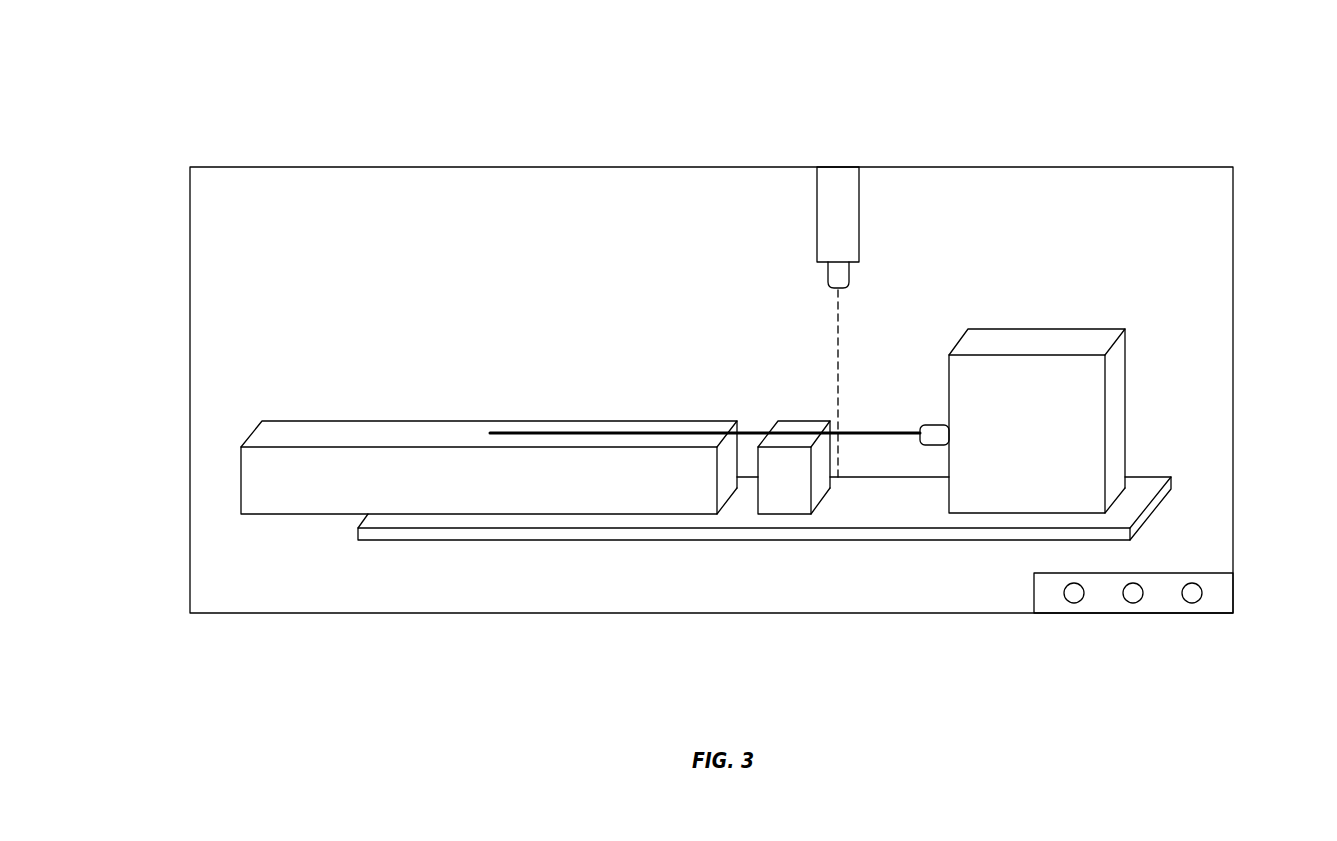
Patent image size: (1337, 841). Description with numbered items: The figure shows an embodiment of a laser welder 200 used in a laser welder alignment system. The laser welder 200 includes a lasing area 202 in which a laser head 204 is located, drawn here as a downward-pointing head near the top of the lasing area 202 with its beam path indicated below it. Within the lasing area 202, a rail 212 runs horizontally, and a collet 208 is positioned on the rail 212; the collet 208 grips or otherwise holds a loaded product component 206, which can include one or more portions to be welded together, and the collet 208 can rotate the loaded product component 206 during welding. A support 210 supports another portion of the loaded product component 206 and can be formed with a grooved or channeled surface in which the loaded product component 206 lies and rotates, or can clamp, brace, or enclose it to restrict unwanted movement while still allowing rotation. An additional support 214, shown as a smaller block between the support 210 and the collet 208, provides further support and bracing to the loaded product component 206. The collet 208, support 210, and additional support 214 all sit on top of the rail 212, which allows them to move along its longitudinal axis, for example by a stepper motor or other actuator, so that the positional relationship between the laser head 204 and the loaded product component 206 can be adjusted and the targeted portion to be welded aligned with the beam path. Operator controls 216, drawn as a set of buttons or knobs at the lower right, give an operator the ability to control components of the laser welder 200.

The laser welder 200 is at (334, 76).
The lasing area 202 is at (222, 256).
The laser head 204 is at (850, 203).
The loaded product component 206 is at (880, 433).
The collet 208 is at (1083, 415).
The support 210 is at (270, 488).
The rail 212 is at (908, 514).
The additional support 214 is at (788, 483).
The operator controls 216 is at (1168, 602).